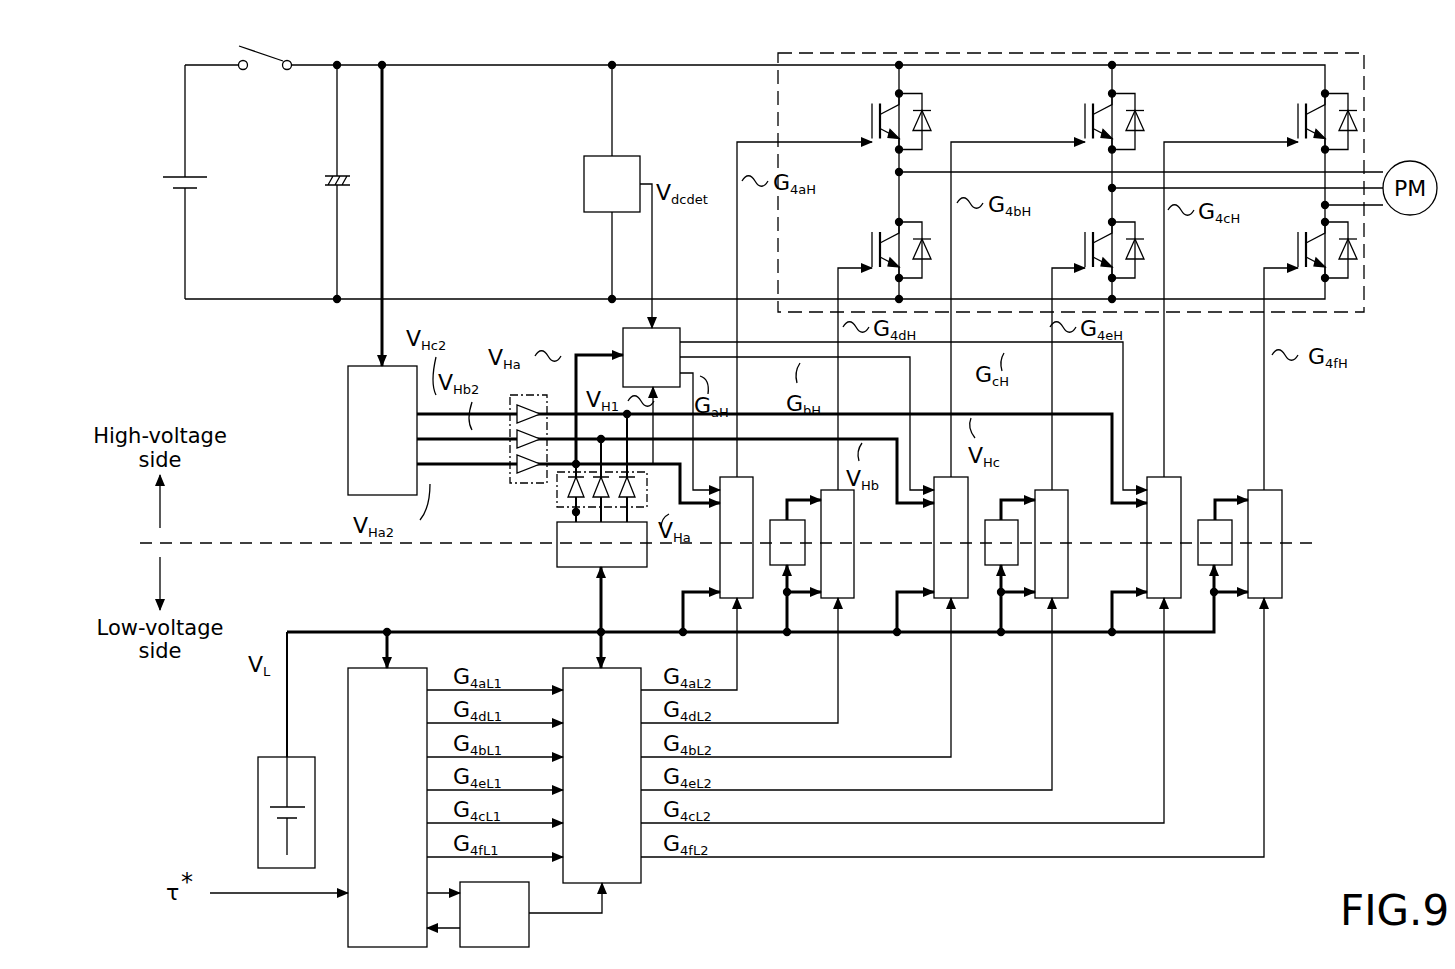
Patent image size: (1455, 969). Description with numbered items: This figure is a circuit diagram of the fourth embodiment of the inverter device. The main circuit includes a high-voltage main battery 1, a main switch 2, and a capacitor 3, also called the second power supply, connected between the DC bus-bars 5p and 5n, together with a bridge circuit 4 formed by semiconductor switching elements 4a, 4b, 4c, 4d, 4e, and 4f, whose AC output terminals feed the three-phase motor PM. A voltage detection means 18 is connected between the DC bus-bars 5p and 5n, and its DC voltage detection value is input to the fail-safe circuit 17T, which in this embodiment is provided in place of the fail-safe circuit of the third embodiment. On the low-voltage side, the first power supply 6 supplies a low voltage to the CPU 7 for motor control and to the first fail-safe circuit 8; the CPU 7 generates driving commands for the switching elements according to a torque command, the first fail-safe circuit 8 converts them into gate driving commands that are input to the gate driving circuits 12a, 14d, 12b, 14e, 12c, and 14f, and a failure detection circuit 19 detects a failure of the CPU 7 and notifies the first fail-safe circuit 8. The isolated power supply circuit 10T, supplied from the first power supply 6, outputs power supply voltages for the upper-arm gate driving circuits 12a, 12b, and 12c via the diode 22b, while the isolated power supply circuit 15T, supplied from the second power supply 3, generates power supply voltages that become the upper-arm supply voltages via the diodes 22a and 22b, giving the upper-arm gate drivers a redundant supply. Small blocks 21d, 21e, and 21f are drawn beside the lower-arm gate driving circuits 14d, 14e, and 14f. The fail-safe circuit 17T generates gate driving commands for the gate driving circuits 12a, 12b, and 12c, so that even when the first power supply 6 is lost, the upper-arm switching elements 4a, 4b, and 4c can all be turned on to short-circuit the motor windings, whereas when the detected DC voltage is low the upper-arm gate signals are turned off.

The high-voltage main battery 1 is at (205, 182).
The main switch 2 is at (246, 49).
The capacitor 3 is at (319, 182).
The bridge circuit 4 is at (1090, 182).
The semiconductor switching element 4a is at (869, 121).
The semiconductor switching element 4b is at (1081, 121).
The semiconductor switching element 4c is at (1293, 121).
The semiconductor switching element 4d is at (869, 250).
The semiconductor switching element 4e is at (1081, 250).
The semiconductor switching element 4f is at (1293, 250).
The DC bus-bar 5p is at (808, 100).
The DC bus-bar 5n is at (755, 268).
The first power supply 6 is at (267, 812).
The CPU for motor control 7 is at (366, 807).
The first fail-safe circuit 8 is at (628, 868).
The isolated power supply circuit for the upper arm 10T is at (571, 555).
The gate driving circuit 12a is at (706, 537).
The gate driving circuit 12b is at (922, 537).
The gate driving circuit 12c is at (1137, 537).
The gate driving circuit 14d is at (874, 544).
The gate driving circuit 14e is at (1085, 544).
The gate driving circuit 14f is at (1296, 544).
The isolated power supply circuit for the upper arm 15T is at (351, 430).
The fail-safe circuit 17T is at (616, 349).
The voltage detection means 18 is at (582, 182).
The failure detection circuit 19 is at (520, 916).
The low-side power supply circuit 21d is at (787, 529).
The low-side power supply circuit 21e is at (1000, 529).
The low-side power supply circuit 21f is at (1213, 529).
The diode 22a is at (492, 450).
The diode 22b is at (570, 473).